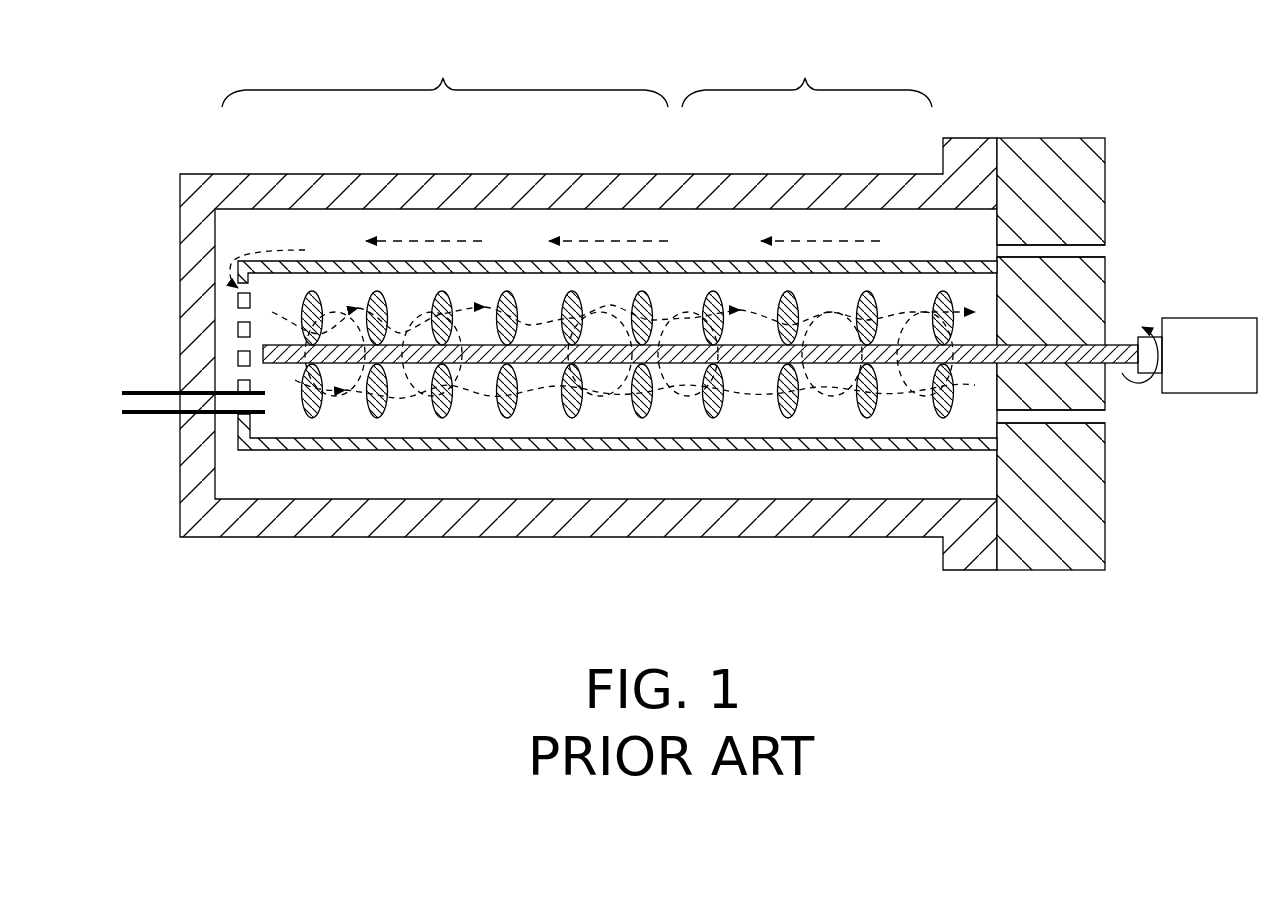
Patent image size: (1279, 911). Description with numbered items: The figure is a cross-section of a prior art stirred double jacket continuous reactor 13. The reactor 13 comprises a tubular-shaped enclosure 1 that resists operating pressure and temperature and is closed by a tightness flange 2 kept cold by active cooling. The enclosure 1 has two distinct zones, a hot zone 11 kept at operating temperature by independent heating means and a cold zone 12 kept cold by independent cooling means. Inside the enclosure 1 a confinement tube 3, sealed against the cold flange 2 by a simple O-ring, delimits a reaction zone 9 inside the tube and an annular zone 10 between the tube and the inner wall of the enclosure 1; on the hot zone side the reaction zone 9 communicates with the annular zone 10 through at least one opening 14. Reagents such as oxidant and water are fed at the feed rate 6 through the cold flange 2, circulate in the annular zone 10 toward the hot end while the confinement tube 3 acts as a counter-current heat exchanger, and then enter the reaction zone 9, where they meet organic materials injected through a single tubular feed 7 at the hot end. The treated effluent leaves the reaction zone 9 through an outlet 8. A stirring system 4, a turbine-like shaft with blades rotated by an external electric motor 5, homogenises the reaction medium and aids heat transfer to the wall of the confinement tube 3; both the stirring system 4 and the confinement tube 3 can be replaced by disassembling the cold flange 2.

The tubular-shaped enclosure 1 is at (824, 515).
The tightness flange 2 is at (1085, 527).
The confinement tube 3 is at (545, 452).
The stirring system 4 is at (752, 366).
The external electric motor 5 is at (1215, 318).
The feed rate 6 is at (1110, 248).
The tubular feed 7 is at (153, 416).
The outlet 8 is at (1107, 417).
The reaction zone 9 is at (348, 403).
The annular zone 10 is at (421, 474).
The hot zone 11 is at (445, 77).
The cold zone 12 is at (807, 77).
The reactor 13 is at (1080, 103).
The opening 14 is at (240, 342).